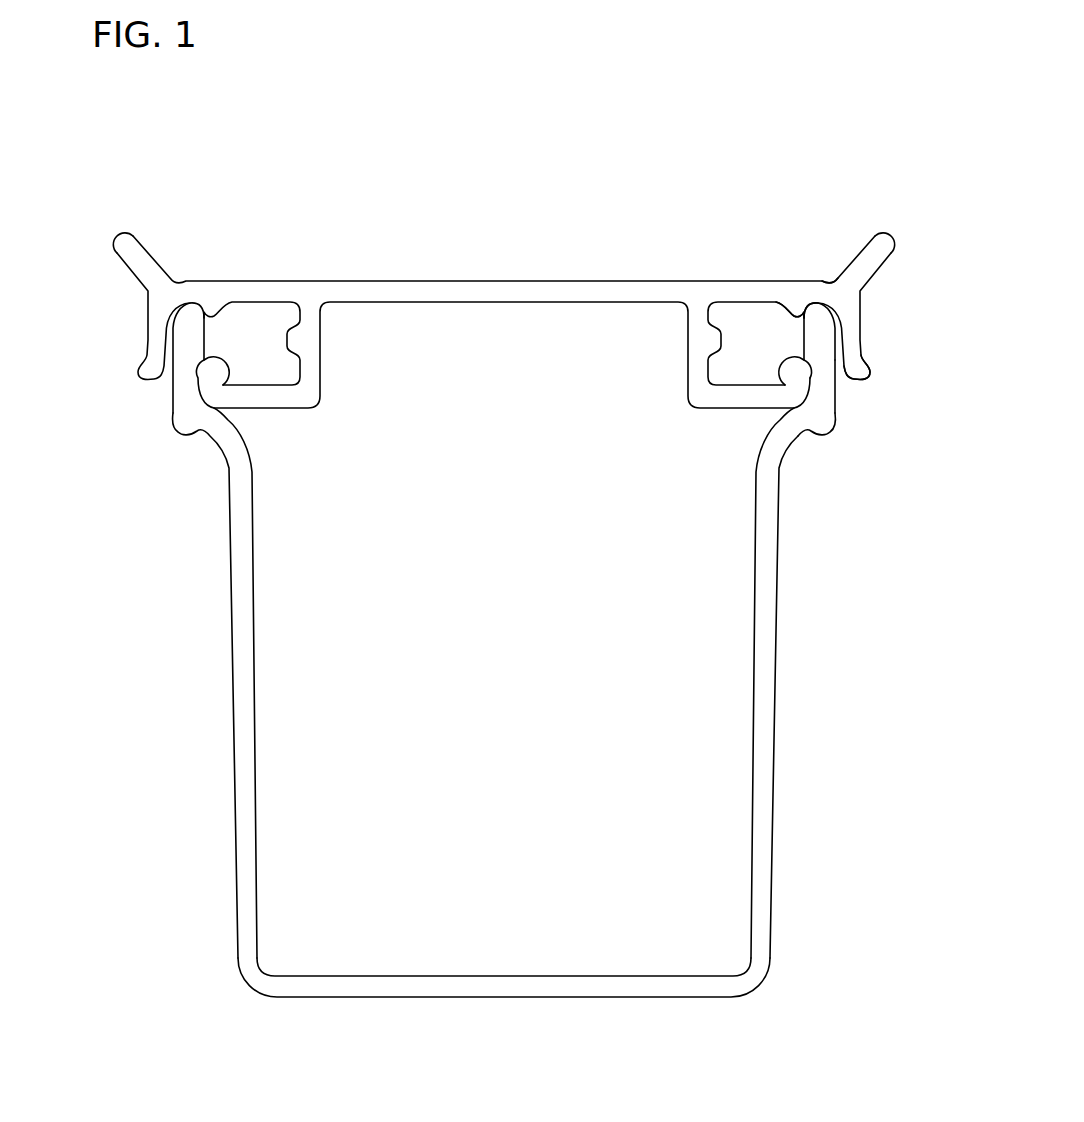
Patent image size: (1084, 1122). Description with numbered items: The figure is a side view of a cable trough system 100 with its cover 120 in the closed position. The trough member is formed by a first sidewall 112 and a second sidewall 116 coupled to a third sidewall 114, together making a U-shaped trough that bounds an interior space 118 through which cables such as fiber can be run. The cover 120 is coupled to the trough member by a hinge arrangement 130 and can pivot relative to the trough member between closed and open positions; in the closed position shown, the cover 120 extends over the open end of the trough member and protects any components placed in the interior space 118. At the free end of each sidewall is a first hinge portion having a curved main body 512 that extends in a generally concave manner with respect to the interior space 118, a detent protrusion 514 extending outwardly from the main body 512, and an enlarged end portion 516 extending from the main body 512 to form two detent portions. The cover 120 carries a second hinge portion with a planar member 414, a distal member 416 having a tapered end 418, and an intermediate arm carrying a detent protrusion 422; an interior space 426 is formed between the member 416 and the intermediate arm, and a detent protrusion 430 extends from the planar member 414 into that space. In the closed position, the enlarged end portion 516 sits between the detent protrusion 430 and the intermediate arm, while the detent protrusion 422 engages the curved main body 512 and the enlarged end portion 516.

The cable trough system 100 is at (862, 100).
The first sidewall 112 is at (762, 713).
The third sidewall 114 is at (491, 999).
The second sidewall 116 is at (237, 650).
The interior space 118 is at (508, 733).
The cover 120 is at (462, 287).
The hinge arrangement 130 is at (114, 294).
The planar member 414 is at (813, 312).
The distal member 416 is at (865, 332).
The tapered end 418 is at (867, 373).
The detent protrusion 422 is at (795, 374).
The interior space 426 is at (738, 348).
The detent protrusion 430 is at (788, 308).
The curved main body 512 is at (823, 380).
The detent protrusion 514 is at (824, 430).
The enlarged end portion 516 is at (820, 283).